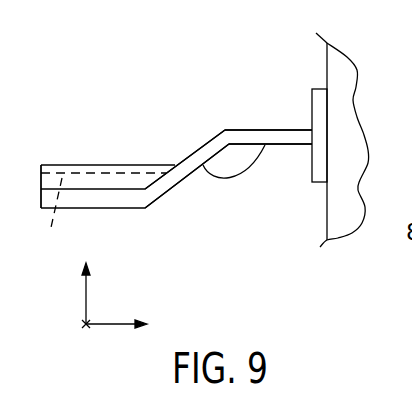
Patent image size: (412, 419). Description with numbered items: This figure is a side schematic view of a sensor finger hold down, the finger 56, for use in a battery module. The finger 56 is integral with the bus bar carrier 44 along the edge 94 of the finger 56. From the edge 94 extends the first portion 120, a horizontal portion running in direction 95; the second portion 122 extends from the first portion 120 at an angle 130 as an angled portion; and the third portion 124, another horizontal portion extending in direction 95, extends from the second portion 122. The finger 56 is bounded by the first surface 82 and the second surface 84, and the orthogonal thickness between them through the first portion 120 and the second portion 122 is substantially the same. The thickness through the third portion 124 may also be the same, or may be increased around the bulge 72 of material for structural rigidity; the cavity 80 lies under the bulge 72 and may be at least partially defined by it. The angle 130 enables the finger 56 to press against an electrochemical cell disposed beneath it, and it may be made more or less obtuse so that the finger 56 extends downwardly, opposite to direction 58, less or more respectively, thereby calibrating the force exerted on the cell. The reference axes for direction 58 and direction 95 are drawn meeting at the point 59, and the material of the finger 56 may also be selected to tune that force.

The finger 56 is at (172, 146).
The bulge 72 is at (50, 165).
The third portion 124 is at (97, 171).
The first surface 82 is at (137, 165).
The second surface 84 is at (96, 208).
The cavity 80 is at (50, 218).
The second portion 122 is at (175, 176).
The first portion 120 is at (243, 129).
The angle 130 is at (240, 177).
The edge 94 is at (312, 127).
The bus bar carrier 44 is at (320, 143).
The direction 58 is at (87, 297).
The origin point 59 is at (85, 324).
The direction 95 is at (112, 322).